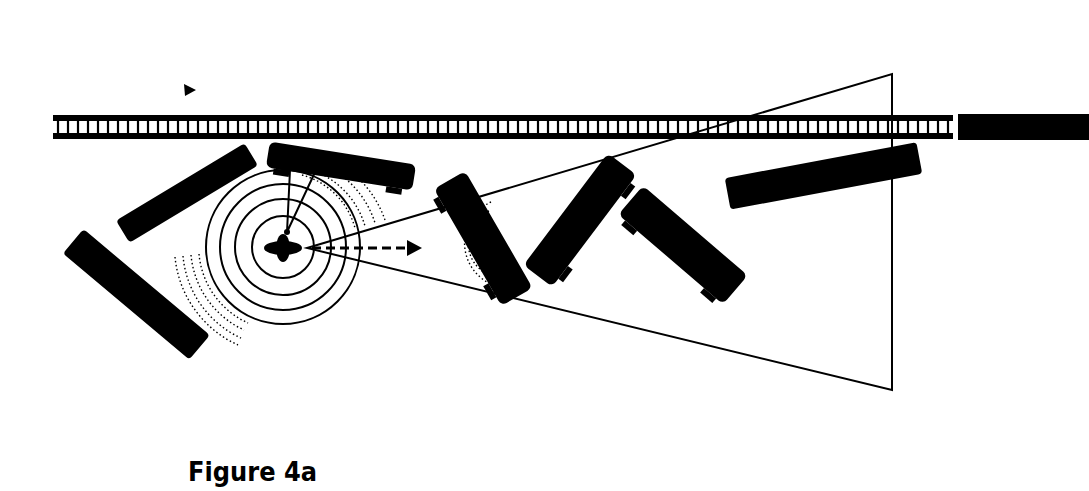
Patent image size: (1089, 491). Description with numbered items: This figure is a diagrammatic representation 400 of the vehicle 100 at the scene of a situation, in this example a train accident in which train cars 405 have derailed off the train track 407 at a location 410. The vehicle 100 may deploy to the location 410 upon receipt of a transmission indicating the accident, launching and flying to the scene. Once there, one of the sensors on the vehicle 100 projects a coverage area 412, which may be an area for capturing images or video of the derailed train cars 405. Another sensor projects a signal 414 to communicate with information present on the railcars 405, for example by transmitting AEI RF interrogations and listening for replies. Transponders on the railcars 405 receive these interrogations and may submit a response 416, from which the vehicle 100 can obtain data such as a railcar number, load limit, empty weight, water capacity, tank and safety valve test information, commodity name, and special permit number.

The diagrammatic representation 400 is at (185, 80).
The vehicle 100 is at (290, 278).
The train cars 405 is at (167, 193).
The train track 407 is at (597, 115).
The location 410 is at (486, 393).
The coverage area 412 is at (319, 140).
The signal 414 is at (350, 273).
The response 416 is at (233, 343).